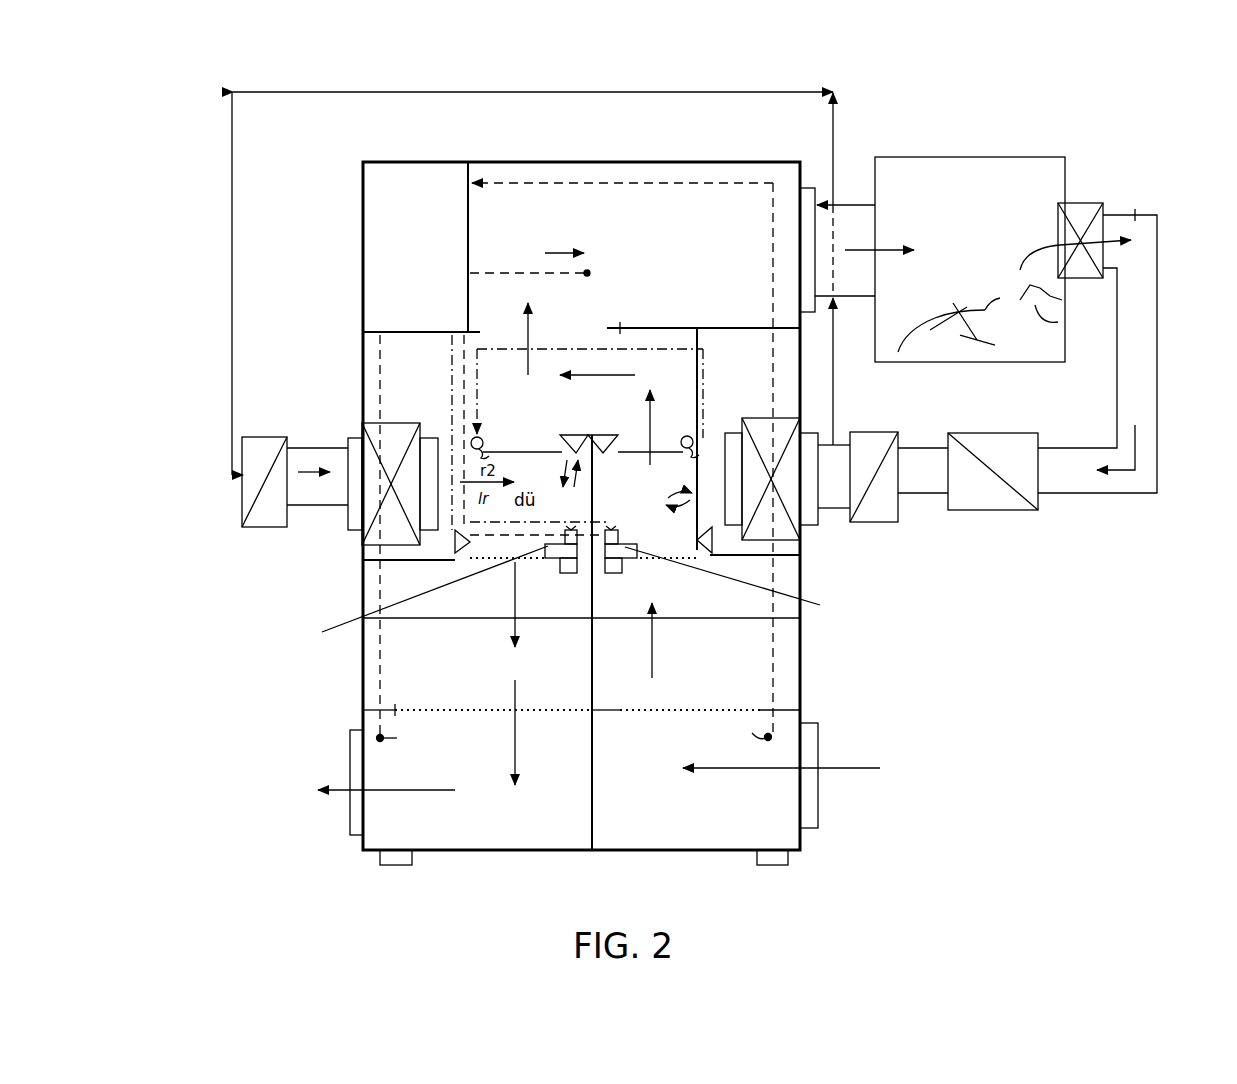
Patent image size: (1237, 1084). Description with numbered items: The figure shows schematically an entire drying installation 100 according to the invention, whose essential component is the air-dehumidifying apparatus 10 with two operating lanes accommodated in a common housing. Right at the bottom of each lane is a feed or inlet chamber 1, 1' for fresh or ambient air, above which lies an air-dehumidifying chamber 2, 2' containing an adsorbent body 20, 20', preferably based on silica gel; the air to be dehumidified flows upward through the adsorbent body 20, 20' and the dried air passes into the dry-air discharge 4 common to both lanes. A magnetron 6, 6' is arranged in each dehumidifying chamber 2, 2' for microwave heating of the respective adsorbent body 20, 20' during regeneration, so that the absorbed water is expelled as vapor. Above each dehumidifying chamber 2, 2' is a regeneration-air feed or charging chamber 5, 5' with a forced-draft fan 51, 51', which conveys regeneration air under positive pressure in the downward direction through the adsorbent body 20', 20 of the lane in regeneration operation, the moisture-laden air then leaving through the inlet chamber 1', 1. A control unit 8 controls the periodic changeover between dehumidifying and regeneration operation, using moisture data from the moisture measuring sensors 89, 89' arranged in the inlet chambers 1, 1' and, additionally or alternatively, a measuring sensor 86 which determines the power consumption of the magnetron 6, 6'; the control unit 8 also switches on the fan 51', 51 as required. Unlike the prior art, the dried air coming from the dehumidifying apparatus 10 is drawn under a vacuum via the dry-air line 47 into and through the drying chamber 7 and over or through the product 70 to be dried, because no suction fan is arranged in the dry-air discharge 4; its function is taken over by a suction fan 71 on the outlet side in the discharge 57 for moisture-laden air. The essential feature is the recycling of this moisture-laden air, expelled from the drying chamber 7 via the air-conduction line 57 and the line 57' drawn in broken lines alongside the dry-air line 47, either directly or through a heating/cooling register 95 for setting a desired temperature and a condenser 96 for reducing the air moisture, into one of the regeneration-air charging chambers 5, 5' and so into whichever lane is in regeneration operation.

The feed or inlet chamber 1 is at (801, 810).
The feed or inlet chamber 1' is at (397, 814).
The air-dehumidifying chamber 2 is at (696, 656).
The air-dehumidifying adsorbent body 20 is at (696, 656).
The air-dehumidifying chamber 2' is at (477, 673).
The air-dehumidifying adsorbent body 20' is at (477, 673).
The dry-air discharge 4 is at (636, 459).
The regeneration-air feed or charging chamber 5 is at (748, 441).
The regeneration-air feed or charging chamber 5' is at (416, 447).
The magnetron 6 is at (713, 585).
The magnetron 6' is at (436, 591).
The drying chamber 7 is at (878, 310).
The product to be dried 70 is at (970, 259).
The control unit 8 is at (421, 247).
The air-dehumidifying apparatus 10 is at (622, 160).
The dry-air line 47 is at (847, 205).
The forced-draft fan 51 is at (791, 495).
The forced-draft fan 51' is at (367, 476).
The discharge or air-conduction line 57 is at (1121, 351).
The supply air line 57' is at (857, 316).
The suction fan 71 is at (1082, 210).
The measuring sensor 86 is at (614, 541).
The moisture measuring sensor 89 is at (744, 737).
The moisture measuring sensor 89' is at (488, 502).
The heating/cooling register 95 is at (1000, 513).
The condenser 96 is at (888, 518).
The drying installation 100 is at (823, 133).